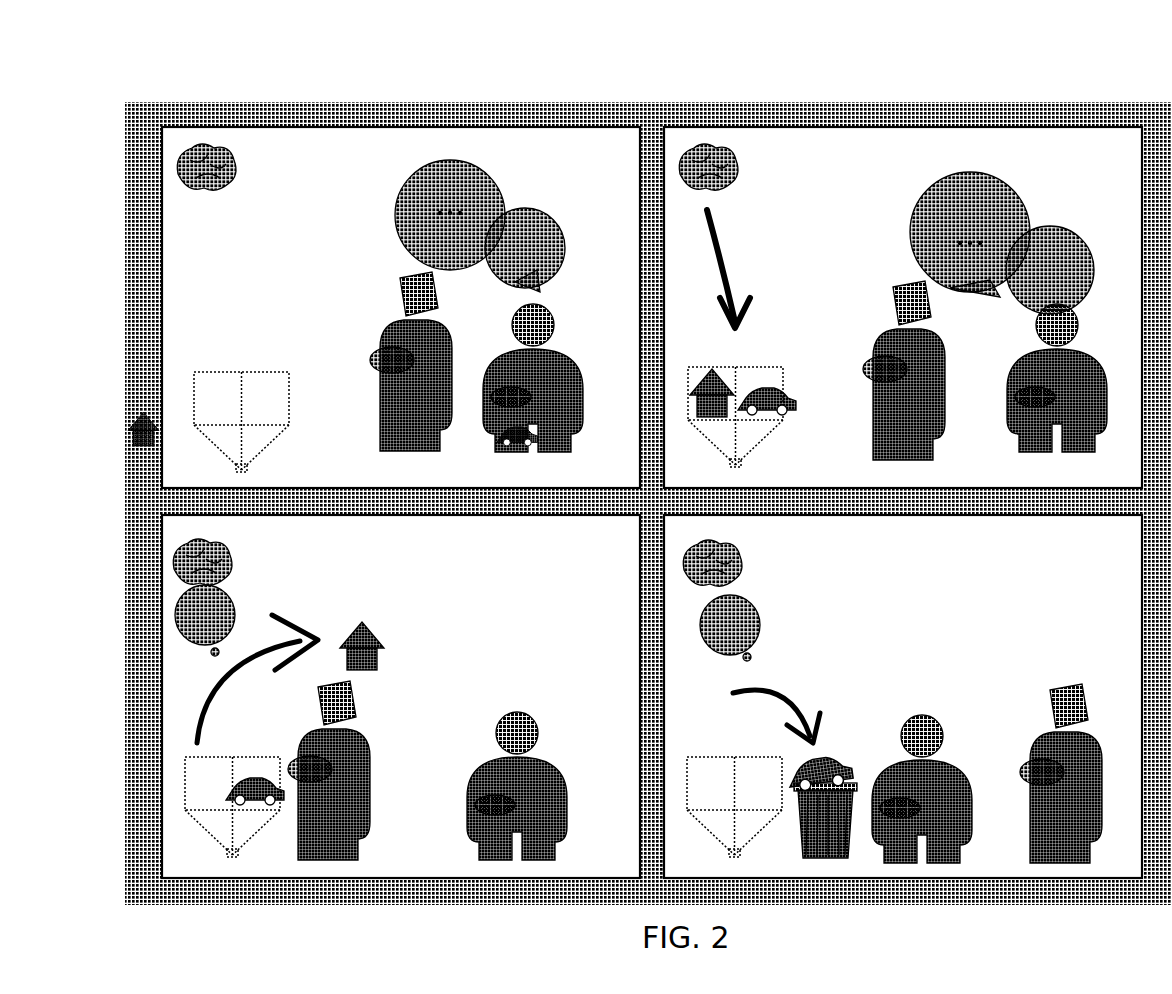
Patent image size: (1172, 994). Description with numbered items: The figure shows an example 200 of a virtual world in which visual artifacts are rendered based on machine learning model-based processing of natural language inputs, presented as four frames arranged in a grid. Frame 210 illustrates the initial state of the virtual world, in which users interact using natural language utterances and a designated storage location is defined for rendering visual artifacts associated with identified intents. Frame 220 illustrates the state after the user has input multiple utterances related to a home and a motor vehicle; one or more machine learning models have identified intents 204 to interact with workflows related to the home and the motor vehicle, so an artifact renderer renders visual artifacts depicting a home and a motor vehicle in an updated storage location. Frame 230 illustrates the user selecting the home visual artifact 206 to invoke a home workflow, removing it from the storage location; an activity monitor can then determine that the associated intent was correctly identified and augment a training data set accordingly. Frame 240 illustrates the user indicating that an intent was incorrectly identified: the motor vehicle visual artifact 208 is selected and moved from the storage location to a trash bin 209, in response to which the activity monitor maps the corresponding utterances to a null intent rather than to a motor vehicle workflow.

The example 200 is at (168, 66).
The intents 204 is at (730, 253).
The home visual artifact 206 is at (375, 636).
The motor vehicle visual artifact 208 is at (820, 762).
The trash bin 209 is at (813, 845).
The frame 210 is at (565, 127).
The frame 220 is at (1077, 127).
The frame 230 is at (565, 878).
The frame 240 is at (1077, 878).